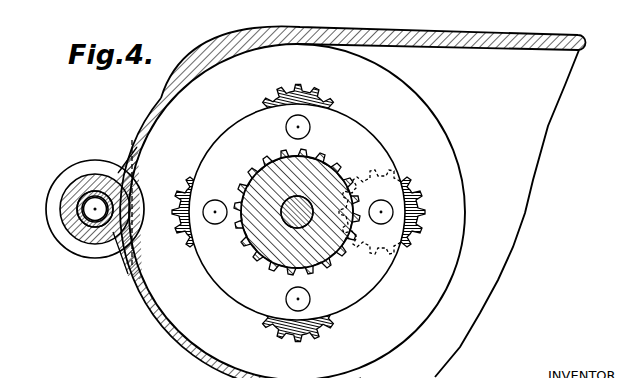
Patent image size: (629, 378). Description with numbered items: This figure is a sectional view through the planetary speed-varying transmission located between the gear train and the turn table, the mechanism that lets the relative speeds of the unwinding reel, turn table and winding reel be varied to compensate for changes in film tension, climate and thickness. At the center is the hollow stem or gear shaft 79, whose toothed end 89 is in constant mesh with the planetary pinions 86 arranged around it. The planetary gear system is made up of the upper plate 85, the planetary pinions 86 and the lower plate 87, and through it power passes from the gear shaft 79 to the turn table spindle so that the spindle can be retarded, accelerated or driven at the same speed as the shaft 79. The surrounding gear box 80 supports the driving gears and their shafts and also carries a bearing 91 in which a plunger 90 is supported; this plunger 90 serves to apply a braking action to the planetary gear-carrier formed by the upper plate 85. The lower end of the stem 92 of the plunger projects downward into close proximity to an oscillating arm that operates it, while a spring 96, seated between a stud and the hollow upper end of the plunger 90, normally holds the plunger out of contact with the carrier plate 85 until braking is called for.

The hollow stem or gear shaft 79 is at (318, 188).
The gear box 80 is at (536, 19).
The upper plate 85 is at (418, 297).
The planetary pinions 86 is at (303, 96).
The lower plate 87 is at (228, 278).
The toothed end 89 is at (268, 173).
The plunger 90 is at (93, 160).
The bearing 91 is at (60, 206).
The stem 92 is at (68, 256).
The spring 96 is at (67, 186).